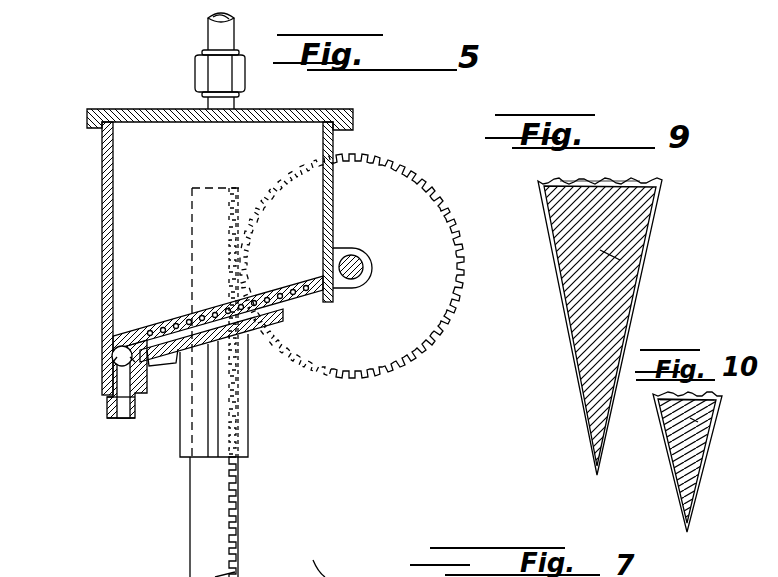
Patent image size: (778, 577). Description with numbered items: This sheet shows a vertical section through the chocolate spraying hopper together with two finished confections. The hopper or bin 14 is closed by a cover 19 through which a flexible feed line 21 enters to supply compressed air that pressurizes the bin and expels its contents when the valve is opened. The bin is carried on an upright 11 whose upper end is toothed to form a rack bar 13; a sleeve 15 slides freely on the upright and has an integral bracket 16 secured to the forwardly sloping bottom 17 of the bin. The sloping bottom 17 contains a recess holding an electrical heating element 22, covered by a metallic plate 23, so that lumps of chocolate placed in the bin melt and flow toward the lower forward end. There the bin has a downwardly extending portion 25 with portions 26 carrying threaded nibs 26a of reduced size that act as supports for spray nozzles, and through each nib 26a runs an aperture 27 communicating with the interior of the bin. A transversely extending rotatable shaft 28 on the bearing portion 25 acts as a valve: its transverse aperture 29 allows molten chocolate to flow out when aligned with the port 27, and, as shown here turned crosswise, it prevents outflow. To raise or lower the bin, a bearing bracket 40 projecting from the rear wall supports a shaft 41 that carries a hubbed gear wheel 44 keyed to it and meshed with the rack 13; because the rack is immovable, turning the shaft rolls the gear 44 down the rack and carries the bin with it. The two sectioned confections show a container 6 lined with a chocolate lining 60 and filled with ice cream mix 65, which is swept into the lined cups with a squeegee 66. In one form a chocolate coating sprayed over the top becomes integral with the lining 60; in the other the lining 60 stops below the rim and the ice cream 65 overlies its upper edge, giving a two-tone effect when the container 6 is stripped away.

In FIG. 5, the cover 19 is at (150, 110).
In FIG. 5, the hopper or bin 14 is at (113, 233).
In FIG. 5, the flexible feed line 21 is at (223, 50).
In FIG. 5, the metallic plate 23 is at (268, 296).
In FIG. 5, the electrical heating element 22 is at (303, 304).
In FIG. 5, the forwardly sloping bottom 17 is at (175, 366).
In FIG. 5, the sleeve 15 is at (240, 424).
In FIG. 5, the bracket 16 is at (215, 388).
In FIG. 5, the rack bar 13 is at (210, 512).
In FIG. 5, the downwardly extending portion 25 is at (106, 377).
In FIG. 5, the aperture 27 is at (121, 419).
In FIG. 5, the rotatable shaft 28 is at (117, 352).
In FIG. 5, the transverse aperture 29 is at (110, 362).
In FIG. 5, the portion 26 is at (105, 399).
In FIG. 5, the threaded nib 26a is at (110, 420).
In FIG. 5, the bearing bracket 40 is at (342, 249).
In FIG. 5, the shaft 41 is at (362, 267).
In FIG. 5, the hubbed gear wheel 44 is at (405, 348).
In FIG. 5, the upright 11 is at (283, 576).
In FIG. 5, the squeegee 66 is at (318, 557).
In FIG. 9, the container 6 is at (650, 275).
In FIG. 10, the container 6 is at (677, 493).
In FIG. 9, the chocolate lining 60 is at (617, 181).
In FIG. 10, the chocolate lining 60 is at (675, 466).
In FIG. 9, the ice cream mix 65 is at (628, 230).
In FIG. 10, the ice cream mix 65 is at (687, 420).